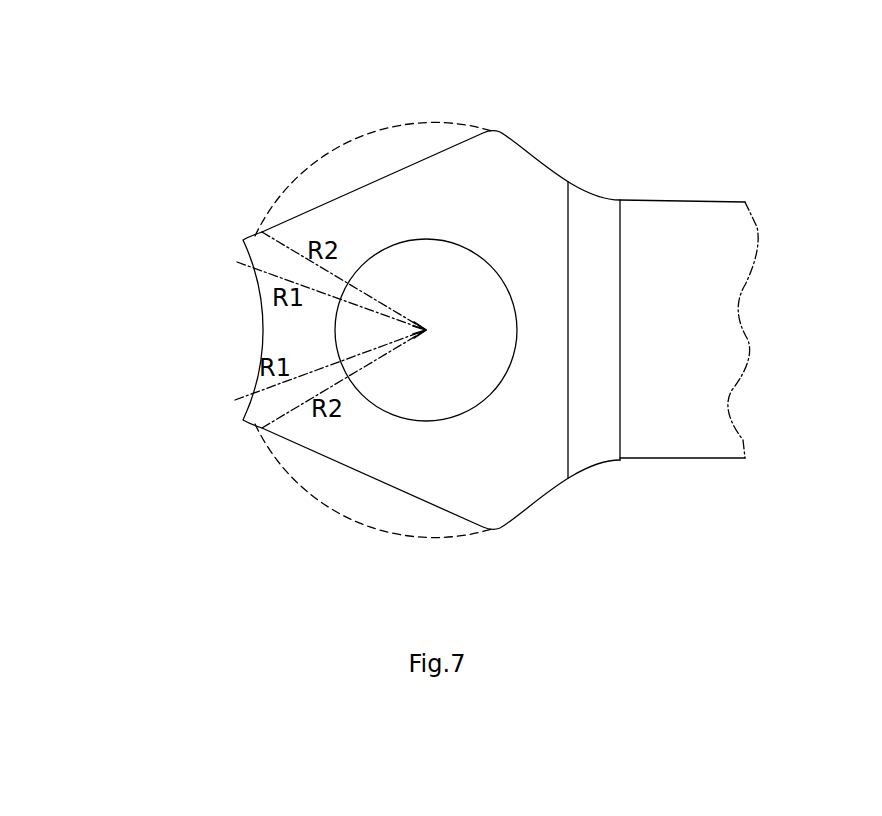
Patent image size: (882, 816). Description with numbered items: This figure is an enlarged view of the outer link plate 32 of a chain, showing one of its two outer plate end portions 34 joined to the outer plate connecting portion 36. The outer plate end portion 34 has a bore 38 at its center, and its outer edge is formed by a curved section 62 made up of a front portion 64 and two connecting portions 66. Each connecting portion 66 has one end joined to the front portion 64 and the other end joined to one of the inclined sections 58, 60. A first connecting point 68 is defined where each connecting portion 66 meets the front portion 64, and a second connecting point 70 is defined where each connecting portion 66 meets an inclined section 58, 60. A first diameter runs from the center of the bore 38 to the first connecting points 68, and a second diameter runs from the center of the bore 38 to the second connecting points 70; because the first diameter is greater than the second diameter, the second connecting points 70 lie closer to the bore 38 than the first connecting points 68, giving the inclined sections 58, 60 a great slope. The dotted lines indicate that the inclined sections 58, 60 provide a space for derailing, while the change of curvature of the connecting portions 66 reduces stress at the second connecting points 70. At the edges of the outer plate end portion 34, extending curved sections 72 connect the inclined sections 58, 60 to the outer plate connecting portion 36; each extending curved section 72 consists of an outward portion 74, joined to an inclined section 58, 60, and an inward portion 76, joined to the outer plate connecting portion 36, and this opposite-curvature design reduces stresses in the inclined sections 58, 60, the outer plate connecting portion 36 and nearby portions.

The outer link plate 32 is at (758, 203).
The outer plate end portion 34 is at (468, 490).
The outer plate connecting portion 36 is at (713, 240).
The bore 38 is at (497, 340).
The inclined section 58 is at (343, 193).
The inclined section 60 is at (357, 472).
The curved section 62 is at (218, 277).
The front portion 64 is at (225, 303).
The connecting portion 66 is at (248, 240).
The first connecting point 68 is at (237, 260).
The second connecting point 70 is at (262, 232).
The extending curved section 72 is at (496, 118).
The outward portion 74 is at (500, 131).
The inward portion 76 is at (563, 172).